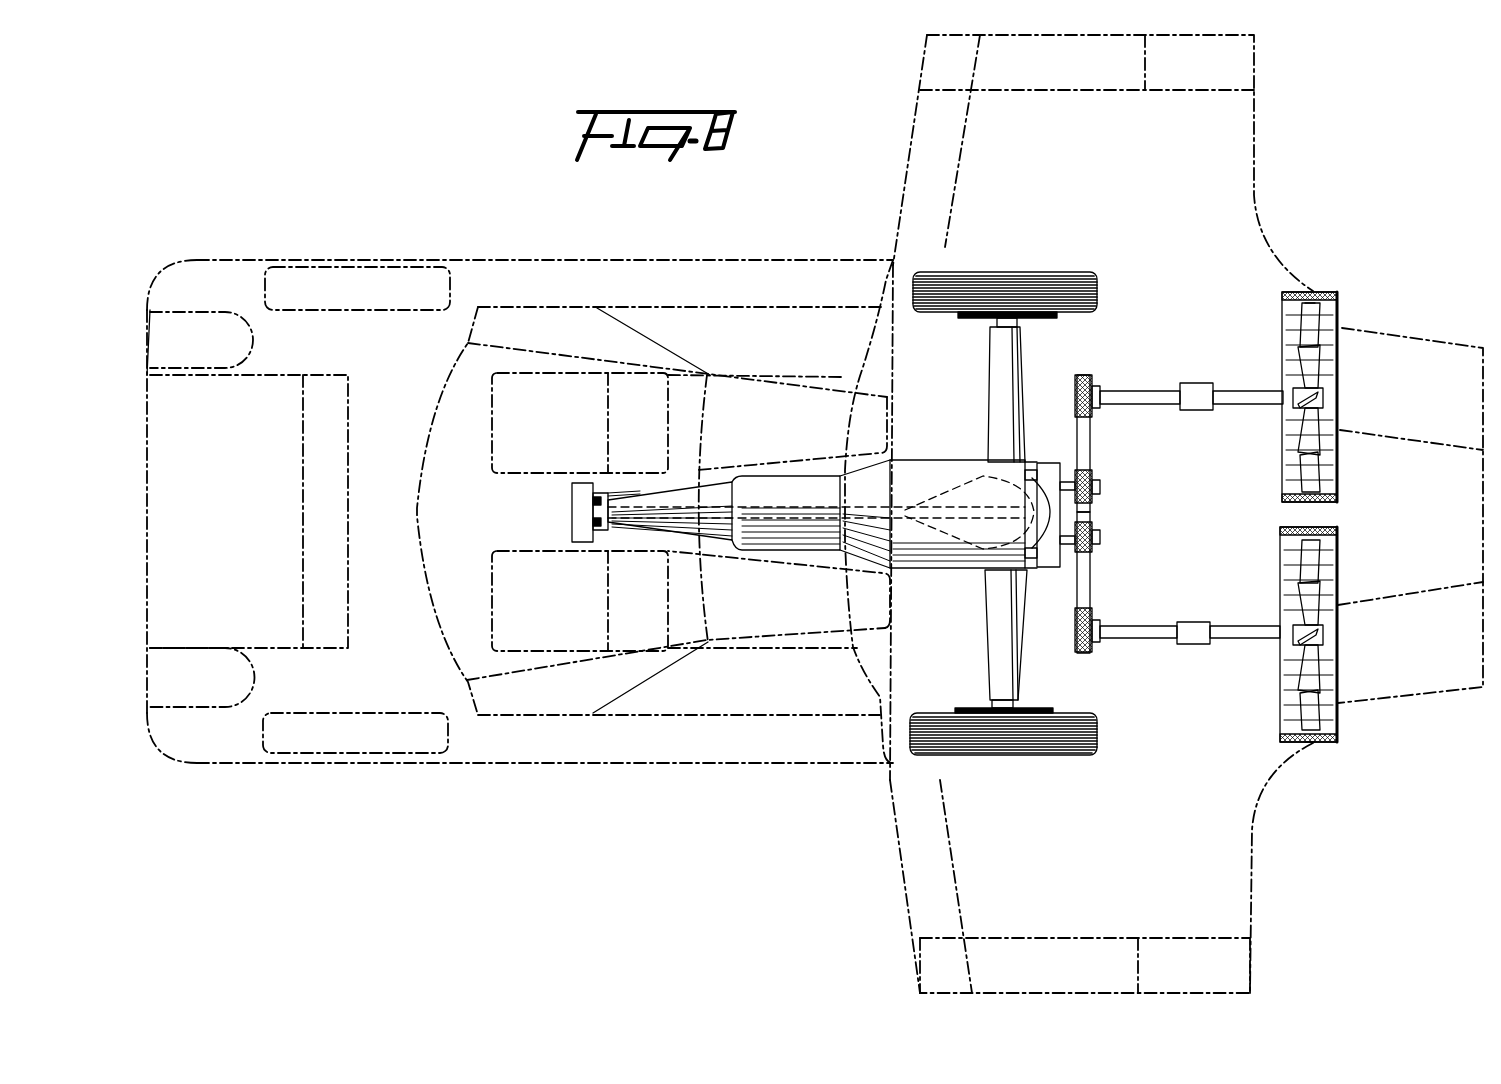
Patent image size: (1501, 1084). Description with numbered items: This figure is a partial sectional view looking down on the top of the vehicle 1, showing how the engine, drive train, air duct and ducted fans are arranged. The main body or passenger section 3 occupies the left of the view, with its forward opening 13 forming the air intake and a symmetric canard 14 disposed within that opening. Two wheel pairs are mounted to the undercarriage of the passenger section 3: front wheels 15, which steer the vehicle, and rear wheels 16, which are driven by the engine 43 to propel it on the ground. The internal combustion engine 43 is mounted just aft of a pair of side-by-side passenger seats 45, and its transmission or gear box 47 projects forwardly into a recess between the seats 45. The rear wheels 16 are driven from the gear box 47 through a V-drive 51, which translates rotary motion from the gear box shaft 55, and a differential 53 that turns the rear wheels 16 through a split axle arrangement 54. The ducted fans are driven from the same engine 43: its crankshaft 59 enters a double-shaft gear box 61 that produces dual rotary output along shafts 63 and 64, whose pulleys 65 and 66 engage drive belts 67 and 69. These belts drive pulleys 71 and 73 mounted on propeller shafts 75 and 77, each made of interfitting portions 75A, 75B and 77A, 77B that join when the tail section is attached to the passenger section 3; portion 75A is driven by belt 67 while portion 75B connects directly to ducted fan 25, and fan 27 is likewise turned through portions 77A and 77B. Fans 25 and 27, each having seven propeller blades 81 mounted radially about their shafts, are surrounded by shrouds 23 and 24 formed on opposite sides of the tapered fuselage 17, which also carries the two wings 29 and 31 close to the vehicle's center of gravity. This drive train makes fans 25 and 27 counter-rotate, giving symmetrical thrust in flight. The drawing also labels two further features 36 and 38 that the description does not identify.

The vehicle 1 is at (412, 240).
The passenger section 3 is at (375, 622).
The forward opening 13 is at (140, 545).
The canard 14 is at (167, 448).
The front wheels 15 is at (290, 270).
The rear wheels 16 is at (1050, 272).
The tapered fuselage 17 is at (1440, 470).
The shroud 23 is at (1313, 296).
The shroud 24 is at (1313, 745).
The ducted fan propeller 25 is at (1337, 318).
The ducted fan propeller 27 is at (1340, 685).
The wing 29 is at (1250, 118).
The wing 31 is at (1220, 890).
The front bumper member 36 is at (920, 958).
The front bumper member 38 is at (1240, 975).
The internal combustion engine 43 is at (878, 470).
The passenger seats 45 is at (775, 390).
The gear box 47 is at (782, 545).
The V-drive 51 is at (575, 503).
The differential 53 is at (950, 568).
The split axle arrangement 54 is at (992, 660).
The gear box shaft 55 is at (578, 548).
The crankshaft 59 is at (1045, 565).
The double-shaft gear box 61 is at (1048, 470).
The output shaft 63 is at (1095, 505).
The output shaft 64 is at (1068, 538).
The pulley 65 is at (1095, 487).
The pulley 66 is at (1092, 548).
The drive belt 67 is at (1090, 457).
The drive belt 69 is at (1088, 583).
The pulley 71 is at (1090, 378).
The pulley 73 is at (1090, 652).
The propeller shaft 75 is at (1191, 384).
The shaft portion 75A is at (1150, 395).
The shaft portion 75B is at (1240, 393).
The propeller shaft 77 is at (1190, 651).
The shaft portion 77A is at (1150, 640).
The shaft portion 77B is at (1244, 640).
The propeller blades 81 is at (1313, 470).